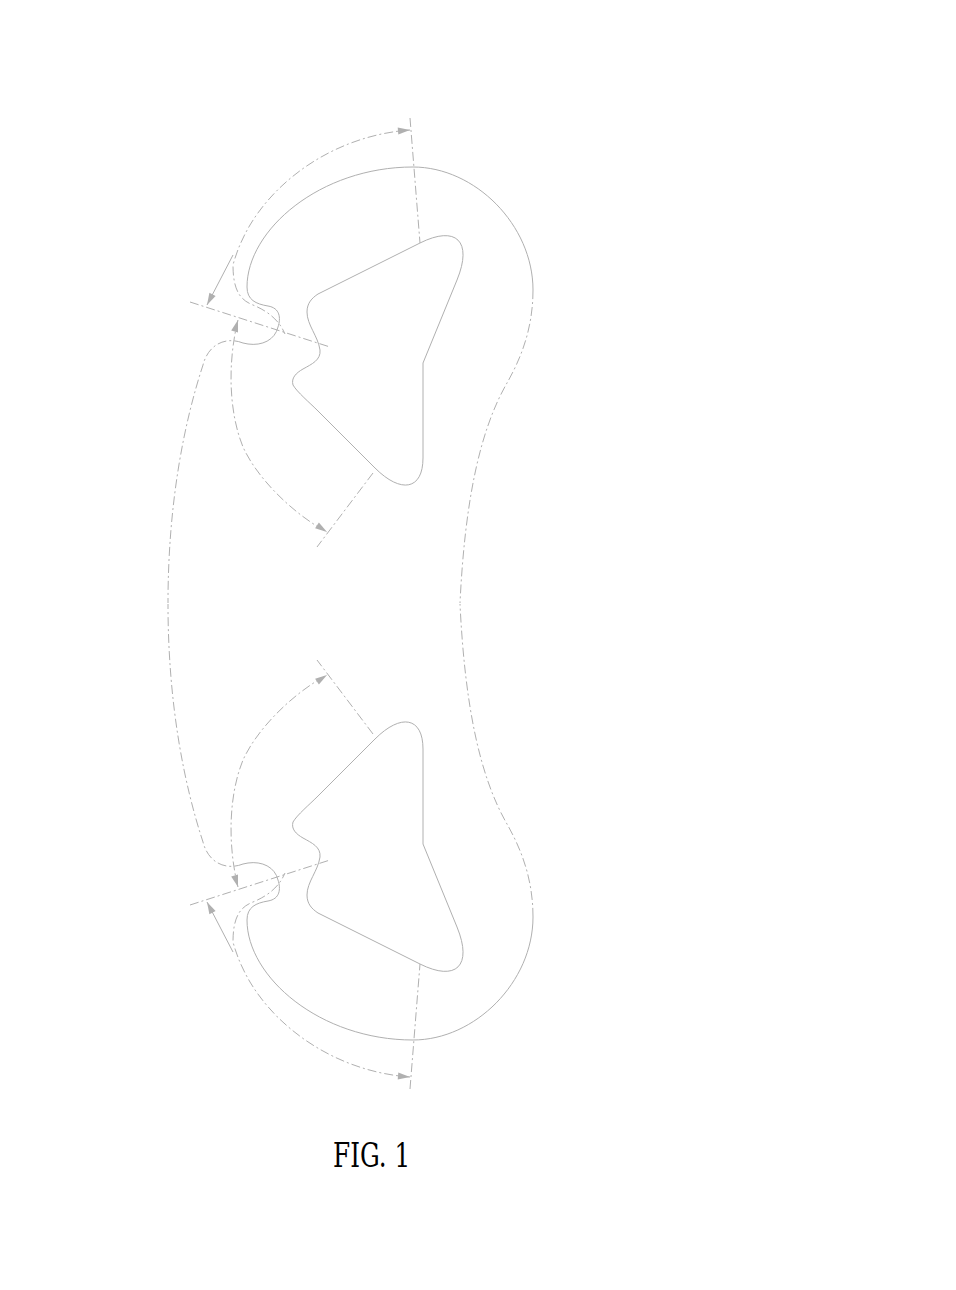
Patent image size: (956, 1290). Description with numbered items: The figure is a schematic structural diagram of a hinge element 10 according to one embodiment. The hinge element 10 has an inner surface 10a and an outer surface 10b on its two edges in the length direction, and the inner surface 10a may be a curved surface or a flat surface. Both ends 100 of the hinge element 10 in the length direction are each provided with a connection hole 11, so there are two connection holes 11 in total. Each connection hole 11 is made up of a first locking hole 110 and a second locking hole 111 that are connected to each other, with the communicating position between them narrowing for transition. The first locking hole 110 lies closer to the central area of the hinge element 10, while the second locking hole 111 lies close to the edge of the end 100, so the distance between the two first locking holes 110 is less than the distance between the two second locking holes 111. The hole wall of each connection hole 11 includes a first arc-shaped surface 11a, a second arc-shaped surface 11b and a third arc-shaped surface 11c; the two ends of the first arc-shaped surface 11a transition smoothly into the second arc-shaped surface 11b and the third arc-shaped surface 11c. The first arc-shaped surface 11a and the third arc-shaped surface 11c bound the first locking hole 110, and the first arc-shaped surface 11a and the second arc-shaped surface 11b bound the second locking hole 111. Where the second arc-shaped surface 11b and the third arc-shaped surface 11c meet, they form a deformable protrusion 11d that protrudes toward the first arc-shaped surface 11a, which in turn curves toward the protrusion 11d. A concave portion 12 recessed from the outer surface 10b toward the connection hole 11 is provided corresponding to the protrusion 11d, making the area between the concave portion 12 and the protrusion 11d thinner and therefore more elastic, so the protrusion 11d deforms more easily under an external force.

The hinge element 10 is at (456, 42).
The inner surface 10a is at (462, 593).
The outer surface 10b is at (167, 640).
The end 100 is at (478, 205).
The connection hole 11 is at (395, 606).
The first locking hole 110 is at (363, 412).
The second locking hole 111 is at (390, 300).
The first arc-shaped surface 11a is at (447, 307).
The second arc-shaped surface 11b is at (305, 168).
The third arc-shaped surface 11c is at (240, 437).
The protrusion 11d is at (297, 373).
The concave portion 12 is at (235, 243).